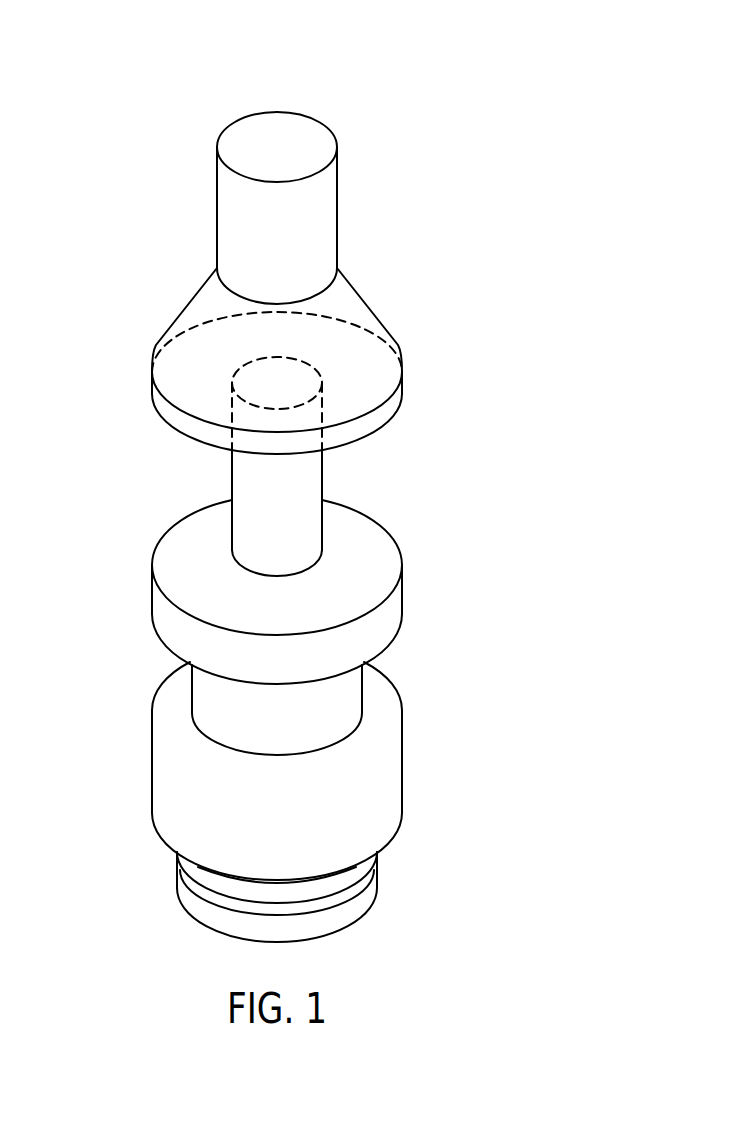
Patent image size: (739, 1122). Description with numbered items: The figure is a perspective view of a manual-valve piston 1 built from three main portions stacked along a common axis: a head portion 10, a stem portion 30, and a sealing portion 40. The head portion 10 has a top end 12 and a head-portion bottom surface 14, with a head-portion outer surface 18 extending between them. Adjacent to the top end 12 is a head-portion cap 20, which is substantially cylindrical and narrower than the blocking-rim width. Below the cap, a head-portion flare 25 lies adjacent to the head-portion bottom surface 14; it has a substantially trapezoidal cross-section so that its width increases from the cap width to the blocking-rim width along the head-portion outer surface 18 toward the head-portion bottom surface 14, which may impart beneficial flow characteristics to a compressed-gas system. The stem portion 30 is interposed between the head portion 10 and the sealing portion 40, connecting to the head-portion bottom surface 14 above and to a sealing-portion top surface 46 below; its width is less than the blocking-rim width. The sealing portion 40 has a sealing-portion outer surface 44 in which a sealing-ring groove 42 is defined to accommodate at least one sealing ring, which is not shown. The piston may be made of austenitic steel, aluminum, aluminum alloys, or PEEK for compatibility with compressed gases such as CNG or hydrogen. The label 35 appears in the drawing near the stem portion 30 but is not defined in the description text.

The manual-valve piston 1 is at (528, 100).
The head portion 10 is at (132, 427).
The top end 12 is at (247, 131).
The head-portion bottom surface 14 is at (376, 385).
The head-portion outer surface 18 is at (343, 210).
The head-portion cap 20 is at (225, 197).
The head-portion flare 25 is at (200, 303).
The stem portion 30 is at (312, 473).
The stem 35 is at (226, 478).
The sealing portion 40 is at (370, 773).
The sealing-ring groove 42 is at (203, 683).
The sealing-portion outer surface 44 is at (148, 763).
The sealing-portion top surface 46 is at (176, 557).